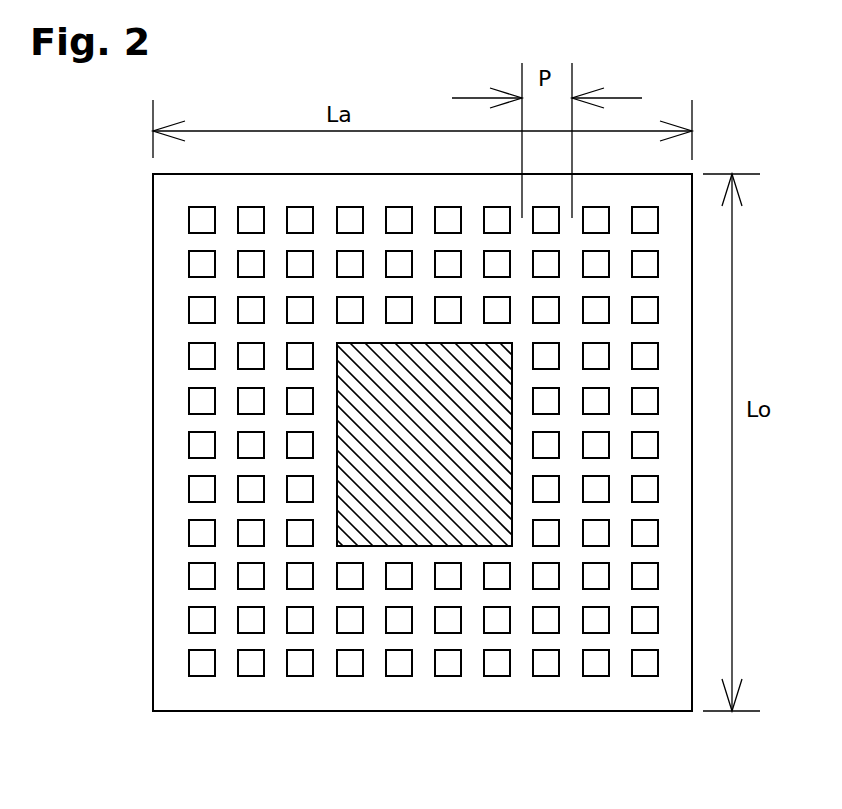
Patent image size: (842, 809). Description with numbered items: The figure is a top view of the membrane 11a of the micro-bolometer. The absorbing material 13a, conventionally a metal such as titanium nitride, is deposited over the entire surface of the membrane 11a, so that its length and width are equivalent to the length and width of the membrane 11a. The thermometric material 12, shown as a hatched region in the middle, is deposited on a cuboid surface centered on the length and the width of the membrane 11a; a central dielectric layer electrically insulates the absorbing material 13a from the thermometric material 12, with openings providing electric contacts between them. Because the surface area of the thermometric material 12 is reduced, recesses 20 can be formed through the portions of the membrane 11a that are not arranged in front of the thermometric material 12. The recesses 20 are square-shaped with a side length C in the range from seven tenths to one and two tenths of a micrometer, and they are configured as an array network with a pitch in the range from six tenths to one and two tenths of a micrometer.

The membrane 11a is at (71, 234).
The thermometric material 12 is at (383, 452).
The absorbing material 13a is at (176, 310).
The recesses 20 is at (647, 357).
The length C is at (545, 677).